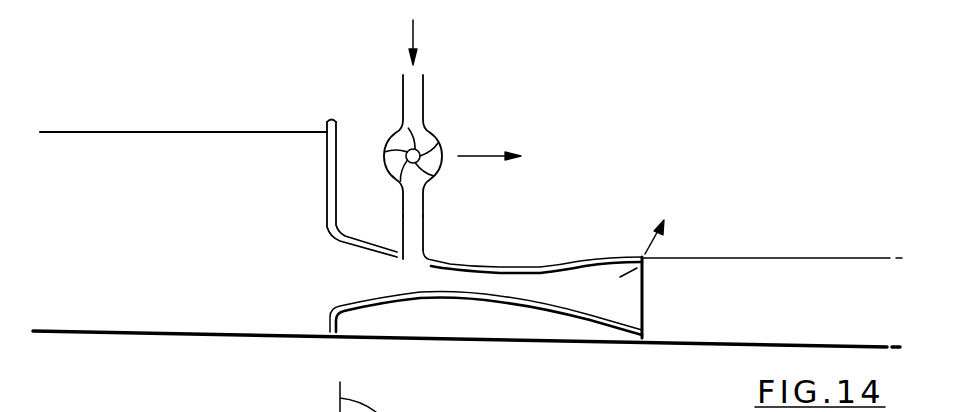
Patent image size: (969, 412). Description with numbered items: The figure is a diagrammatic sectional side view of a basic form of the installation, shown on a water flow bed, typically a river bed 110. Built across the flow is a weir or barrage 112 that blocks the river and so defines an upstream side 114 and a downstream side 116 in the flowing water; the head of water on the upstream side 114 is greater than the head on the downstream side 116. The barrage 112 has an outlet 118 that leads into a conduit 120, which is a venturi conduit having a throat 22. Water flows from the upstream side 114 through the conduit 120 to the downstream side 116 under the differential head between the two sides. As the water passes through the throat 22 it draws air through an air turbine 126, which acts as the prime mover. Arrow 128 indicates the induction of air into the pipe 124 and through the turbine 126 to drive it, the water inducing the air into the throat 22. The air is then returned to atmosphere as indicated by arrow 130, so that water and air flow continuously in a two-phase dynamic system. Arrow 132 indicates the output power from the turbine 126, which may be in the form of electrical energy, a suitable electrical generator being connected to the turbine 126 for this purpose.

The river bed 110 is at (113, 333).
The weir or barrage 112 is at (325, 170).
The upstream side 114 is at (96, 150).
The downstream side 116 is at (720, 272).
The outlet 118 is at (332, 275).
The conduit 120 is at (488, 305).
The throat 22 is at (457, 275).
The pipe 124 is at (425, 216).
The air turbine 126 is at (424, 109).
The arrow indicating induction of air 128 is at (415, 38).
The arrow indicating air returned to atmosphere 130 is at (652, 250).
The arrow indicating output power 132 is at (480, 154).